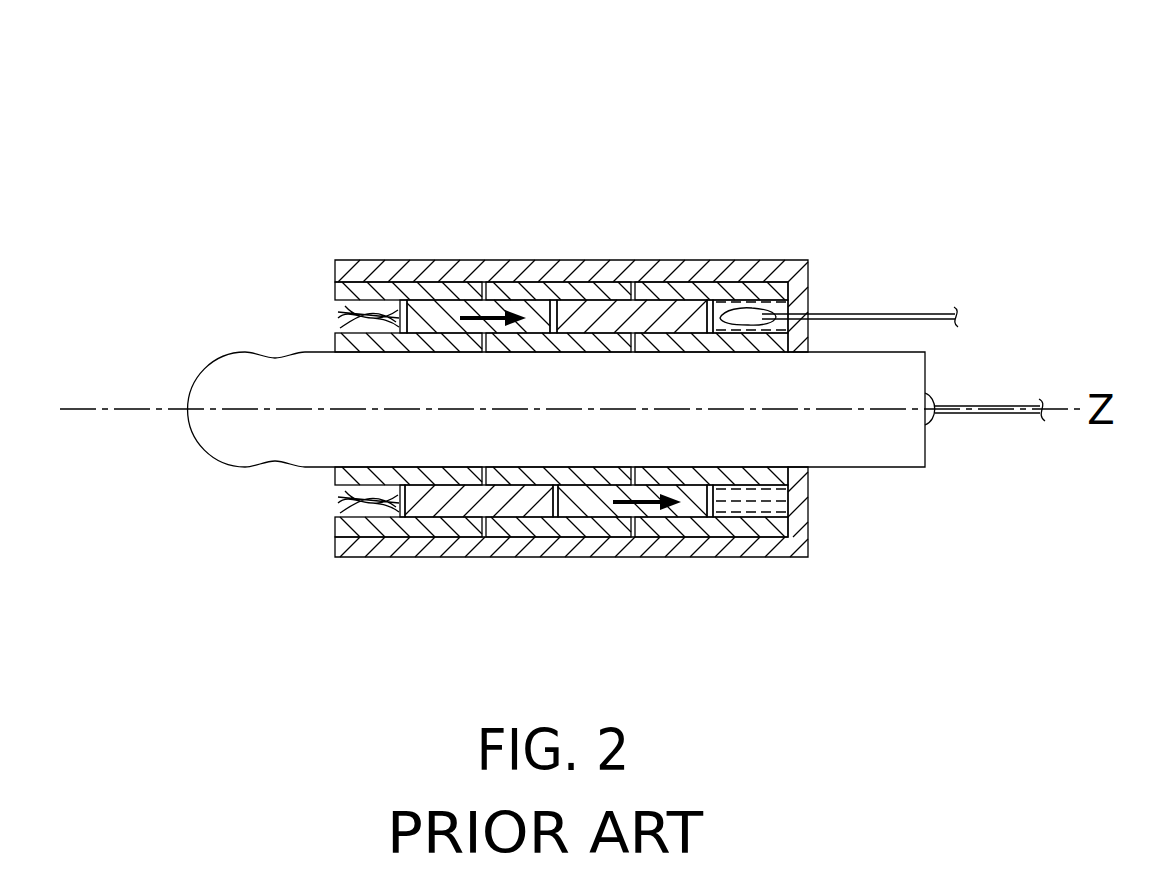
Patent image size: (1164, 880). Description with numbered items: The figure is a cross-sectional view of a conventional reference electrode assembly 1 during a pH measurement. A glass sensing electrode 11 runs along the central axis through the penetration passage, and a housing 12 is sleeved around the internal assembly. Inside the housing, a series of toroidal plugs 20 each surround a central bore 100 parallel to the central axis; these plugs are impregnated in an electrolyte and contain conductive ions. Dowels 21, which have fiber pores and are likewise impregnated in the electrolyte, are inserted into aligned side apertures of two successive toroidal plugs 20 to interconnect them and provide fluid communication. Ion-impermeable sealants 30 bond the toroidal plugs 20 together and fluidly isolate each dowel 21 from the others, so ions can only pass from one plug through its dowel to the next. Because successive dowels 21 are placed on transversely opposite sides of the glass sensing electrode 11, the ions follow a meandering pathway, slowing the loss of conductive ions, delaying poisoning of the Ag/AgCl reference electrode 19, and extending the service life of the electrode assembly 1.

The reference electrode assembly 1 is at (352, 158).
The glass sensing electrode 11 is at (865, 450).
The housing 12 is at (592, 265).
The reference electrode 19 is at (752, 318).
The toroidal plugs 20 is at (705, 290).
The dowels 21 is at (527, 334).
The sealants 30 is at (553, 300).
The central bore 100 is at (688, 465).